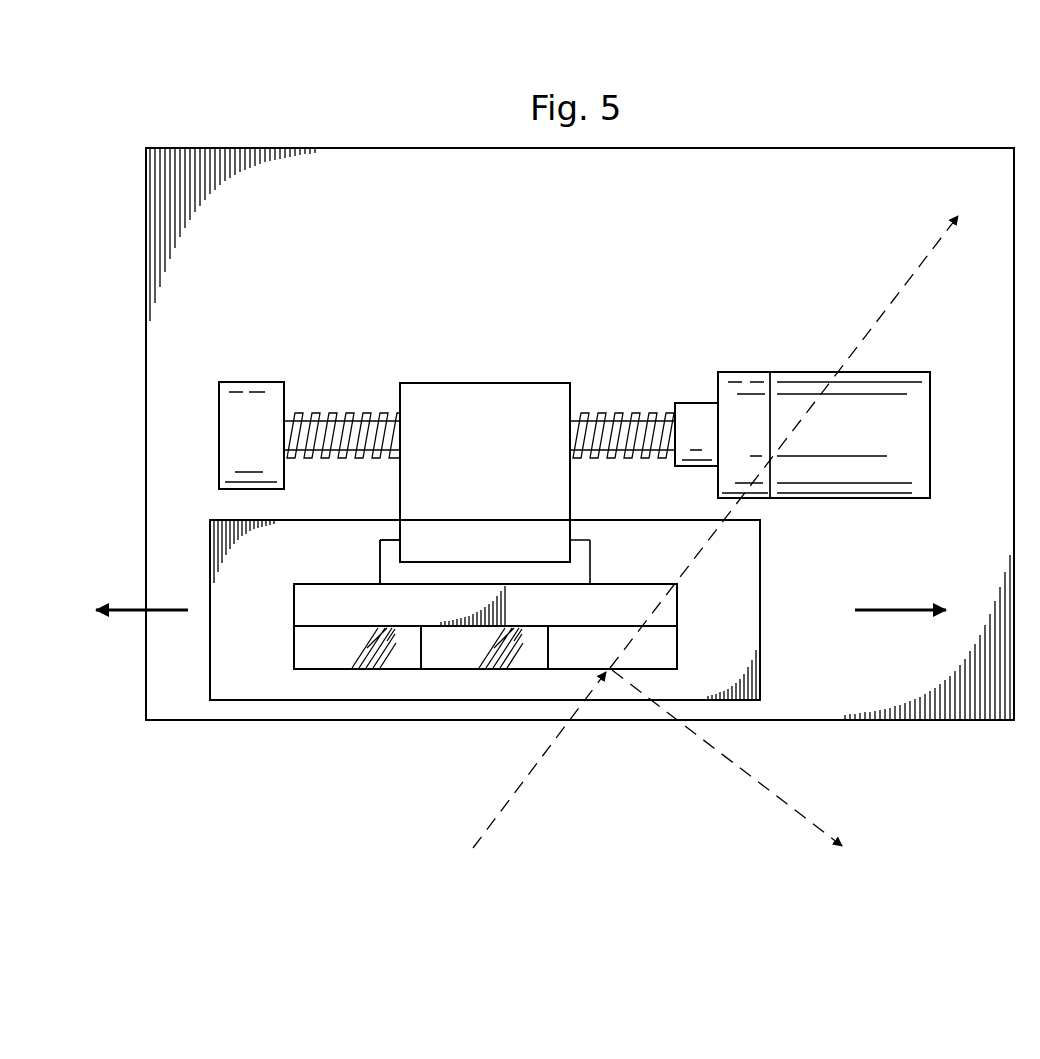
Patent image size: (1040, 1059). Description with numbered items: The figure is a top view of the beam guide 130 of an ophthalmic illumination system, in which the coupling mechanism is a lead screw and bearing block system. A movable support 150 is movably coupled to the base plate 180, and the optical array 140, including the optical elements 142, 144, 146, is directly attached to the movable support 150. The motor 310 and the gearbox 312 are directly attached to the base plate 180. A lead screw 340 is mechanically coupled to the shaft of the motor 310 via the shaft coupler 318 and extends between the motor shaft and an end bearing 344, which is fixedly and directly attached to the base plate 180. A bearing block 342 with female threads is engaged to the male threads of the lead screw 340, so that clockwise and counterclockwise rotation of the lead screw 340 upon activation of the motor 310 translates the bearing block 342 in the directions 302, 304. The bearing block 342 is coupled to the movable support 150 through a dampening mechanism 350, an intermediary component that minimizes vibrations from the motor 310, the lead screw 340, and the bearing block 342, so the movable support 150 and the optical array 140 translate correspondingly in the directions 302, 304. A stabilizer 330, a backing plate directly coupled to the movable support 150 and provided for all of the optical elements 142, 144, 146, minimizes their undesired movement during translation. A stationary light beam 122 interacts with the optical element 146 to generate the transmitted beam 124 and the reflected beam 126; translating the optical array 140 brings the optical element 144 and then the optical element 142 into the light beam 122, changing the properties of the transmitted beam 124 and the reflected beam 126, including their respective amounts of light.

The beam guide 130 is at (336, 126).
The base plate 180 is at (492, 306).
The end bearing 344 is at (251, 382).
The lead screw 340 is at (630, 413).
The bearing block 342 is at (506, 510).
The shaft coupler 318 is at (694, 403).
The motor 310 is at (891, 498).
The gearbox 312 is at (746, 382).
The movable support 150 is at (216, 632).
The dampening mechanism 350 is at (386, 562).
The optical array 140 is at (695, 648).
The stabilizer 330 is at (612, 590).
The optical element 142 is at (335, 660).
The optical element 144 is at (460, 660).
The optical element 146 is at (646, 659).
The light beam 122 is at (508, 803).
The transmitted beam 124 is at (892, 305).
The reflected beam 126 is at (775, 788).
The direction 302 is at (124, 608).
The direction 304 is at (893, 612).